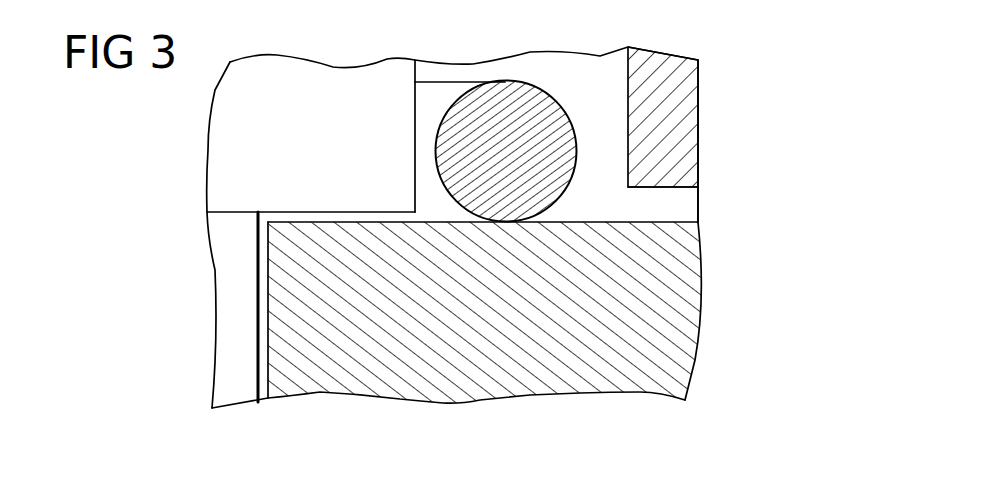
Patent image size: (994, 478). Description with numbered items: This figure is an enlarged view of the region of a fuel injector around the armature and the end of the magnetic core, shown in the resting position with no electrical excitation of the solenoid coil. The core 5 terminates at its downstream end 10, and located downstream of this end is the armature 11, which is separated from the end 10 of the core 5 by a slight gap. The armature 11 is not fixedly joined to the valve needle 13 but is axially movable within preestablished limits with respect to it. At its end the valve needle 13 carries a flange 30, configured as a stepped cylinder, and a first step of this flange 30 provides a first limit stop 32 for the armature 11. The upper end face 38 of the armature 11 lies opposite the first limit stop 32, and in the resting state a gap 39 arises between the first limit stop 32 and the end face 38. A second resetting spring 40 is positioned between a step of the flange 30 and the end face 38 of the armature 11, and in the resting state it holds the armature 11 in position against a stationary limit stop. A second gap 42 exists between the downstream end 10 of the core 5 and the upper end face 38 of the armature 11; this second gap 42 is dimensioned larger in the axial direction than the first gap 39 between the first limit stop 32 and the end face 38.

The flange 30 is at (192, 187).
The end face of armature 38 is at (388, 212).
The valve needle 13 is at (238, 252).
The first limit stop 32 is at (355, 222).
The gap 39 is at (407, 223).
The second resetting spring 40 is at (553, 122).
The core 5 is at (675, 112).
The downstream end of core 10 is at (650, 187).
The second gap 42 is at (683, 205).
The armature 11 is at (675, 318).